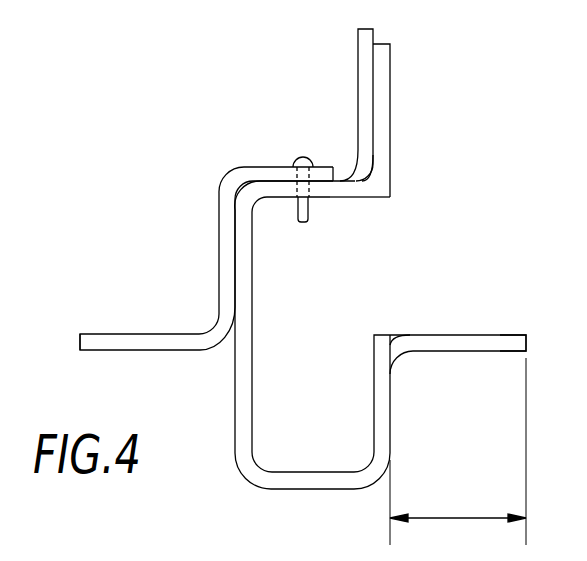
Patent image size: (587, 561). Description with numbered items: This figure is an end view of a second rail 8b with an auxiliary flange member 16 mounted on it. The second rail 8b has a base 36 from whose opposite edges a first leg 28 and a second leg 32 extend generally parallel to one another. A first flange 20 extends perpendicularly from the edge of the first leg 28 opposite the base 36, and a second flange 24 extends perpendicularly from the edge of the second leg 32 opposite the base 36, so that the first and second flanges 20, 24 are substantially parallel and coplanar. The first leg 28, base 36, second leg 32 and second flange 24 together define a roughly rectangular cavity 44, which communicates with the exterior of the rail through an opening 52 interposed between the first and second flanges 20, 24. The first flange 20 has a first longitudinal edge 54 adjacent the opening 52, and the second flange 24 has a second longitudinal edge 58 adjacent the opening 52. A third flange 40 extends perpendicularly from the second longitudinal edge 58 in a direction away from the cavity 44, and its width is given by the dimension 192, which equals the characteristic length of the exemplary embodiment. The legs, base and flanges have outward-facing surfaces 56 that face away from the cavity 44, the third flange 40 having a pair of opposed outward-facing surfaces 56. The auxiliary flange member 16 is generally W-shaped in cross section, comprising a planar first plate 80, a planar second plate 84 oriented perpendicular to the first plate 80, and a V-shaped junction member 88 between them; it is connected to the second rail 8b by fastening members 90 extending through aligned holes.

The auxiliary flange member 16 is at (147, 312).
The second plate 84 is at (110, 351).
The junction member 88 is at (257, 167).
The second rail 8b is at (226, 479).
The base 36 is at (235, 369).
The second leg 32 is at (312, 490).
The second flange 24 is at (390, 408).
The cavity 44 is at (307, 393).
The second longitudinal edge 58 is at (383, 333).
The third flange 40 is at (463, 333).
The outward-facing surface 56 is at (507, 334).
The opening 52 is at (396, 280).
The first leg 28 is at (333, 198).
The first longitudinal edge 54 is at (372, 198).
The first flange 20 is at (390, 70).
The first plate 80 is at (358, 67).
The fastening member 90 is at (300, 157).
The dimension 192 is at (460, 518).